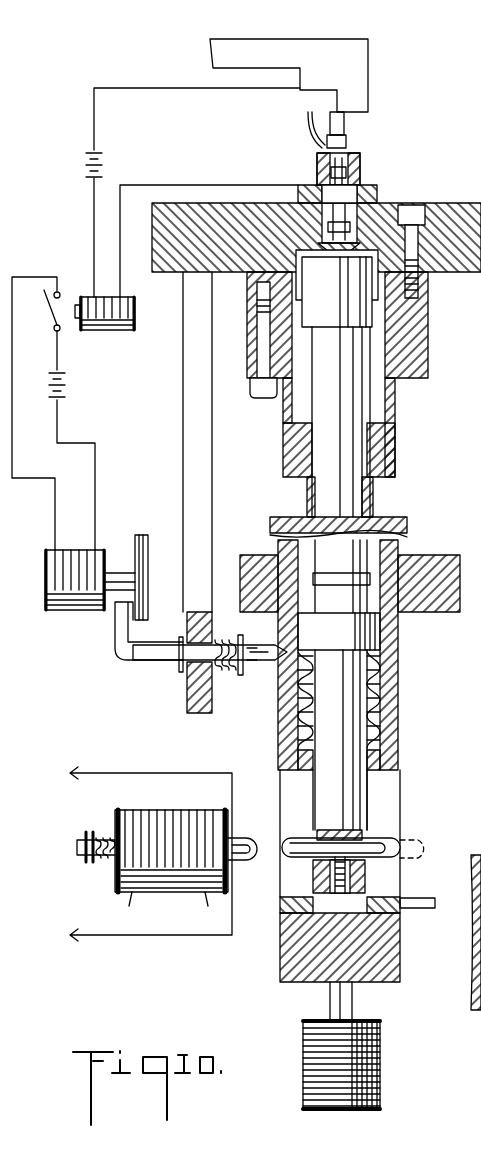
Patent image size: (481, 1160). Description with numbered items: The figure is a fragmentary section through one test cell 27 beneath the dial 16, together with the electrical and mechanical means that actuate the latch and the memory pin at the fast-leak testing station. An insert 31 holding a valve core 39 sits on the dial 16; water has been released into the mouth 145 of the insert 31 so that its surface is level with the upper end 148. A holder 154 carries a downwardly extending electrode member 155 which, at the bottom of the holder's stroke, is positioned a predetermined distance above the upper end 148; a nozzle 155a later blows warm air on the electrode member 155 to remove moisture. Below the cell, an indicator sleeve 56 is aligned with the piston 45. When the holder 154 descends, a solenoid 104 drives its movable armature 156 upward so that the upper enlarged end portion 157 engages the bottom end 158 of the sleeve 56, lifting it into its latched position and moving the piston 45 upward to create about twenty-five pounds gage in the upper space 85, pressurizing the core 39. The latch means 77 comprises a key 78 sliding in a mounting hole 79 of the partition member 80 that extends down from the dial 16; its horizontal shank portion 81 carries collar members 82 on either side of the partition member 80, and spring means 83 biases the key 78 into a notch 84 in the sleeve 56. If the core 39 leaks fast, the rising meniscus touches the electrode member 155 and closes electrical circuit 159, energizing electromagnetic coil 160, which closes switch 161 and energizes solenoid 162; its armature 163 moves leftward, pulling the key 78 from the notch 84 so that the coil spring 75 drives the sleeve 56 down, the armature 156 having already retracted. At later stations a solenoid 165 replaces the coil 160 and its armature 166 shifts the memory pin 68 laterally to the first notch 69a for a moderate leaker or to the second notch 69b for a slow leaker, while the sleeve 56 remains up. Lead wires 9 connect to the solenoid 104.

The holder 154 is at (348, 48).
The electrode member 155 is at (345, 137).
The nozzle 155a is at (305, 125).
The upper end of insert 148 is at (330, 153).
The mouth of insert 145 is at (325, 160).
The valve core 39 is at (348, 175).
The insert 31 is at (378, 187).
The dial 16 is at (178, 256).
The piston 45 is at (349, 300).
The upper space of cylinder 85 is at (375, 290).
The test cell 27 is at (407, 396).
The partition member 80 is at (197, 440).
The electrical circuit 159 is at (141, 76).
The switch 161 is at (60, 313).
The electromagnetic coil 160 is at (97, 332).
The solenoid 162 is at (68, 612).
The armature 163 is at (118, 580).
The collar members 82 is at (180, 640).
The horizontal shank portion 81 is at (187, 683).
The latch means 77 is at (160, 680).
The mounting hole 79 is at (190, 680).
The spring means 83 is at (228, 668).
The key 78 is at (252, 662).
The notch 84 is at (265, 662).
The indicator sleeve 56 is at (400, 657).
The coil spring 75 is at (372, 715).
The solenoid 165 is at (186, 825).
The armature 166 is at (247, 845).
The second notch 69b is at (308, 857).
The pin member 68 is at (400, 840).
The first notch 69a is at (325, 875).
The bottom end of sleeve 158 is at (280, 905).
The upper enlarged end portion 157 is at (290, 964).
The movable armature 156 is at (333, 1000).
The solenoid 104 is at (338, 1100).
The lead wires 9 is at (290, 1047).